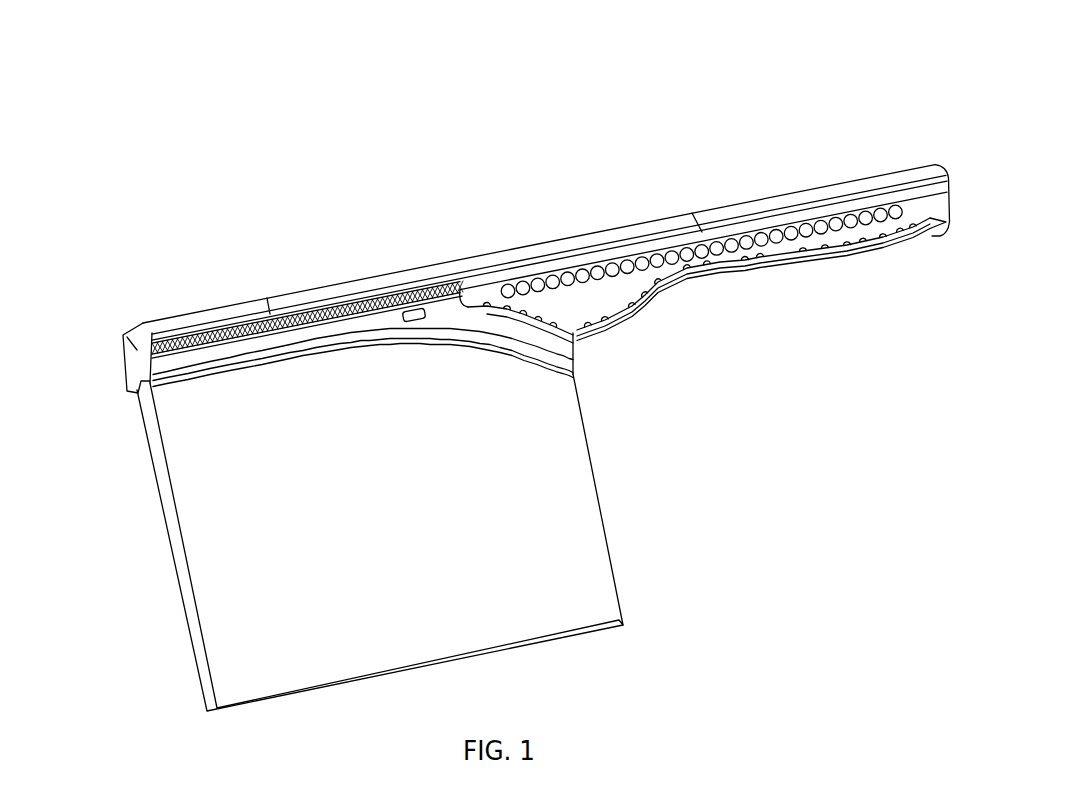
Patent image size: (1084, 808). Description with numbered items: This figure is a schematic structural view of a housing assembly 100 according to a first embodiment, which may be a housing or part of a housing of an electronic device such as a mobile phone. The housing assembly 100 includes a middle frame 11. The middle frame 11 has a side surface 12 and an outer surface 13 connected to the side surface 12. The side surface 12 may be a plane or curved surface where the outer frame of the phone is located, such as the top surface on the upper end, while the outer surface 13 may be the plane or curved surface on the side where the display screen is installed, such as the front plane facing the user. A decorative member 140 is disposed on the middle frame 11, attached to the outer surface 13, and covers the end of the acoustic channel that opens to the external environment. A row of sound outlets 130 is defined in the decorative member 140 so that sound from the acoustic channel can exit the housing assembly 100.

The housing assembly 100 is at (498, 377).
The middle frame 11 is at (127, 337).
The side surface 12 is at (546, 246).
The outer surface 13 is at (688, 313).
The sound outlet 130 is at (601, 265).
The decorative member 140 is at (580, 330).